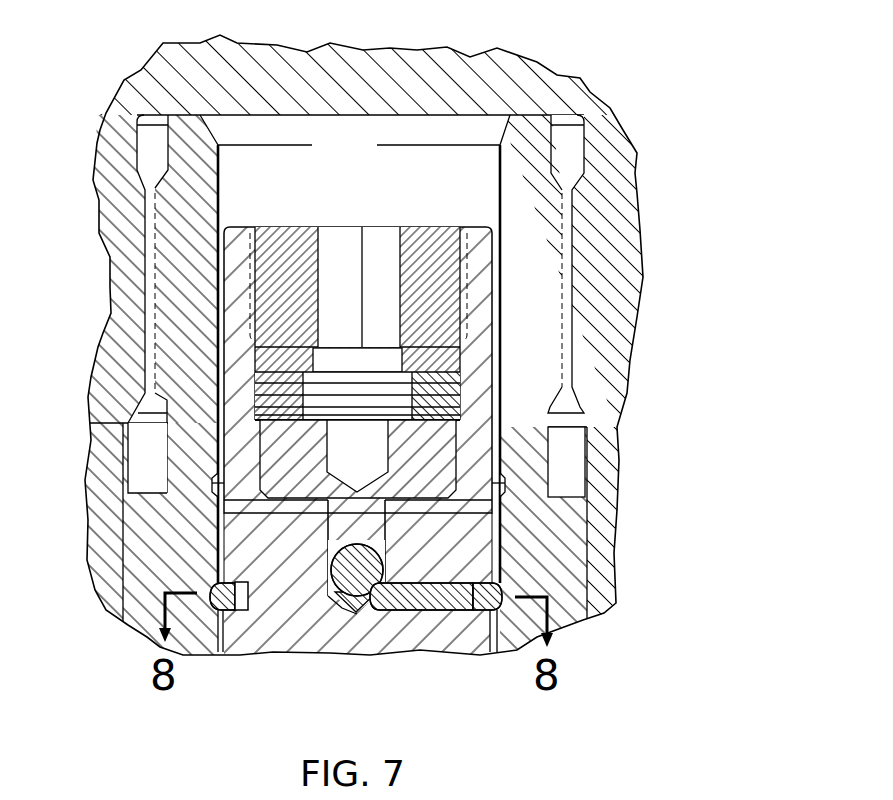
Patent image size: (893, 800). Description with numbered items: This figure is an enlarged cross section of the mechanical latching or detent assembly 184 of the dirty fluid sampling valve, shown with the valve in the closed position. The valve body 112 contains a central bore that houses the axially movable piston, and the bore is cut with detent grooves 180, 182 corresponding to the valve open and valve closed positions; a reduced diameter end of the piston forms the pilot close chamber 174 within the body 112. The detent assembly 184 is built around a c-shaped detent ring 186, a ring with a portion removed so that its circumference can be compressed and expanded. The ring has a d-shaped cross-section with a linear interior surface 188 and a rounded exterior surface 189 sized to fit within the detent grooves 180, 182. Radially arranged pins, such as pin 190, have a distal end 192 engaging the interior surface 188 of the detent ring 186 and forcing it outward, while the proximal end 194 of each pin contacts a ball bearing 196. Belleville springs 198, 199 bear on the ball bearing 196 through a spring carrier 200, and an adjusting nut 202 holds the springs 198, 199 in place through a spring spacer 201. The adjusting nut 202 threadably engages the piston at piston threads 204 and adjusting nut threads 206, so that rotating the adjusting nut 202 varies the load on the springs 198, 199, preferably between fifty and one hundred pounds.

The pilot close chamber 174 is at (262, 160).
The mechanical latching or detent assembly 184 is at (303, 212).
The valve body 112 is at (178, 328).
The piston threads 204 is at (486, 262).
The detent groove 180 is at (528, 493).
The detent groove 182 is at (200, 590).
The linear interior surface 188 is at (505, 612).
The adjusting nut 202 is at (486, 297).
The spring spacer 201 is at (466, 360).
The adjusting nut threads 206 is at (468, 248).
The belleville spring 198 is at (466, 386).
The belleville spring 199 is at (466, 414).
The spring carrier 200 is at (440, 455).
The proximal end 194 is at (362, 607).
The ball bearing 196 is at (352, 596).
The pin 190 is at (458, 606).
The distal end 192 is at (447, 603).
The c-shaped detent ring 186 is at (222, 596).
The rounded exterior surface 189 is at (240, 597).